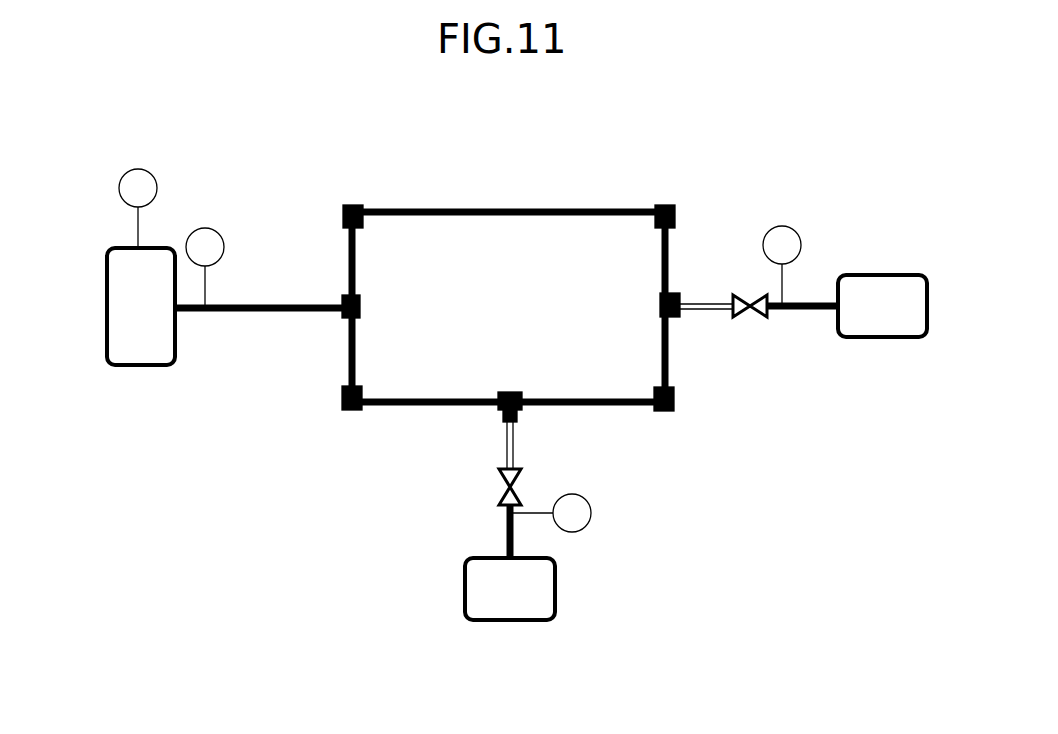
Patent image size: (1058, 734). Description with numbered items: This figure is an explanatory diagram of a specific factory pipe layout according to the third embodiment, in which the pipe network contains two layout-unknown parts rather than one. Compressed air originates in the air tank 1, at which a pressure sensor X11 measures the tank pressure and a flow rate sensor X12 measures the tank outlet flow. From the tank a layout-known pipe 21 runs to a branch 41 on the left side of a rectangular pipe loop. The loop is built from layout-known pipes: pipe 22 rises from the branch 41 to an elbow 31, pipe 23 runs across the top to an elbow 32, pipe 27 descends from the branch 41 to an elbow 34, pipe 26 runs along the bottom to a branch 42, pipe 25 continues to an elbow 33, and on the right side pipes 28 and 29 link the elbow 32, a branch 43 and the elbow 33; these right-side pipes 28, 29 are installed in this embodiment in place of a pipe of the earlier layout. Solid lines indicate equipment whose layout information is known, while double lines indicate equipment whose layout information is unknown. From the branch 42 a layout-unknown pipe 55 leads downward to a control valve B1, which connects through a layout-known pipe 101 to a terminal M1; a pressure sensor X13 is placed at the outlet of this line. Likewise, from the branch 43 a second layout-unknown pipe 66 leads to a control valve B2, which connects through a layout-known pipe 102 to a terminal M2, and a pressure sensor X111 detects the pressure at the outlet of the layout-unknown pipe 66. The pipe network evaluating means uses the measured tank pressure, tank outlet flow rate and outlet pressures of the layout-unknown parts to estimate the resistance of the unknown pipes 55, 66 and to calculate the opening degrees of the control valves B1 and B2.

The air tank 1 is at (110, 252).
The pressure sensor X11 is at (140, 168).
The flow rate sensor X12 is at (208, 228).
The pipe of which layout information is known 21 is at (242, 305).
The elbow of which layout information is known 31 is at (355, 203).
The elbow of which layout information is known 32 is at (673, 202).
The elbow of which layout information is known 33 is at (672, 412).
The elbow of which layout information is known 34 is at (345, 412).
The pipe of which layout information is known 23 is at (510, 208).
The pipe of which layout information is known 22 is at (353, 268).
The pipe of which layout information is known 27 is at (357, 350).
The pipe of which layout information is known 26 is at (425, 397).
The pipe of which layout information is known 25 is at (575, 397).
The pipe of which layout information is known 28 is at (670, 250).
The pipe of which layout information is known 29 is at (668, 367).
The branch of which layout information is known 41 is at (355, 305).
The branch of which layout information is known 42 is at (507, 395).
The branch of which layout information is known 43 is at (675, 293).
The pipe of which layout information is unknown 55 is at (515, 450).
The pipe of which layout information is unknown 66 is at (693, 313).
The control valve B1 is at (523, 483).
The control valve B2 is at (747, 318).
The pipe of which layout information is known 101 is at (500, 522).
The pipe of which layout information is known 102 is at (798, 303).
The pressure sensor X13 is at (590, 500).
The pressure sensor X111 is at (793, 227).
The terminal M1 is at (555, 590).
The terminal M2 is at (887, 278).